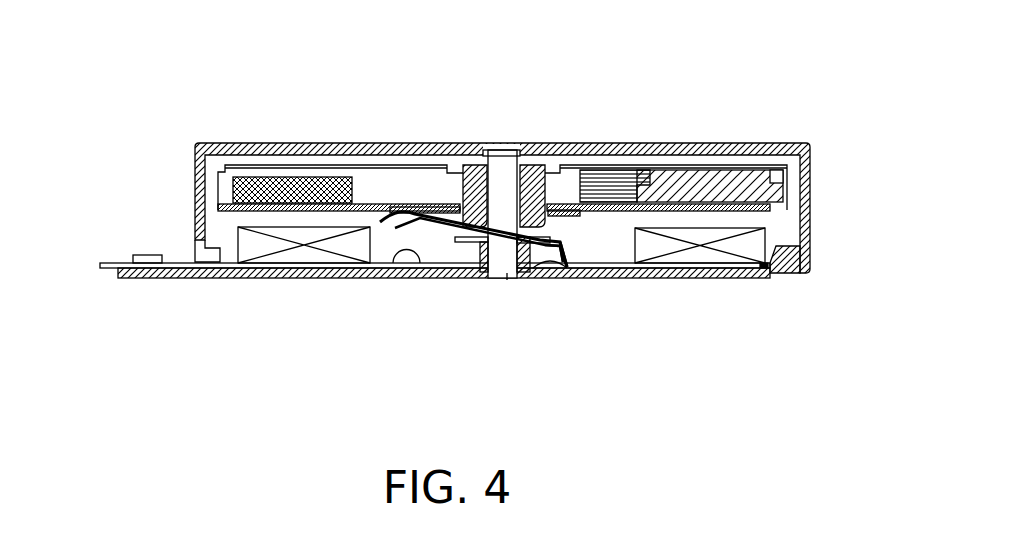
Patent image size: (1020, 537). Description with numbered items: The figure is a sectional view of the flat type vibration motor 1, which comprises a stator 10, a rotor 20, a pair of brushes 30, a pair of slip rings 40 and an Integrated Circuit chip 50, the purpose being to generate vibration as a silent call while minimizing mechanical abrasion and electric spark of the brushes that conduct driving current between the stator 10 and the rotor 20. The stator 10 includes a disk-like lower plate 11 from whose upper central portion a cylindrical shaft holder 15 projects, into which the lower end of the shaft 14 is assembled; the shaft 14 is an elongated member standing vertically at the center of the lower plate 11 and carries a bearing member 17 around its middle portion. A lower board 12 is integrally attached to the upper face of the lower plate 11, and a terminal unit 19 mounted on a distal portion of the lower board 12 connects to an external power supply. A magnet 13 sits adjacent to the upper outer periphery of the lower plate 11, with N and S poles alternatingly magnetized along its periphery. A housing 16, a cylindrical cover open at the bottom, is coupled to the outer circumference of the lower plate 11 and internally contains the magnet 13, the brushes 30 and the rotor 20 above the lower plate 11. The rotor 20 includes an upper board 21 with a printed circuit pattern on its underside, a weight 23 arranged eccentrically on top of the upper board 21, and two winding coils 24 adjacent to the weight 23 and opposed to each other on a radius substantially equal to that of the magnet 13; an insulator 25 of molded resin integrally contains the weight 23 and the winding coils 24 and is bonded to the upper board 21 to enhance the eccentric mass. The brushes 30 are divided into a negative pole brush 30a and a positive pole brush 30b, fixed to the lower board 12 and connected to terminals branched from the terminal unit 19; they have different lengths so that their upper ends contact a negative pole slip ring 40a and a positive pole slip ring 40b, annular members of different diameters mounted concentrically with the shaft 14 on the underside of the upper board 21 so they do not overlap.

The flat type vibration motor 1 is at (830, 82).
The stator 10 is at (103, 308).
The lower plate 11 is at (208, 279).
The lower board 12 is at (417, 264).
The magnet 13 is at (309, 255).
The shaft 14 is at (507, 272).
The shaft holder 15 is at (470, 248).
The housing 16 is at (687, 143).
The bearing member 17 is at (532, 150).
The terminal unit 19 is at (133, 252).
The rotor 20 is at (157, 117).
The upper board 21 is at (228, 205).
The weight 23 is at (767, 170).
The winding coils 24 is at (610, 170).
The insulator 25 is at (365, 190).
The brushes 30 is at (600, 327).
The negative pole brush 30a is at (587, 283).
The positive pole brush 30b is at (557, 277).
The slip rings 40 is at (373, 107).
The negative pole slip ring 40a is at (438, 198).
The positive pole slip ring 40b is at (397, 203).
The Integrated Circuit chip 50 is at (266, 176).